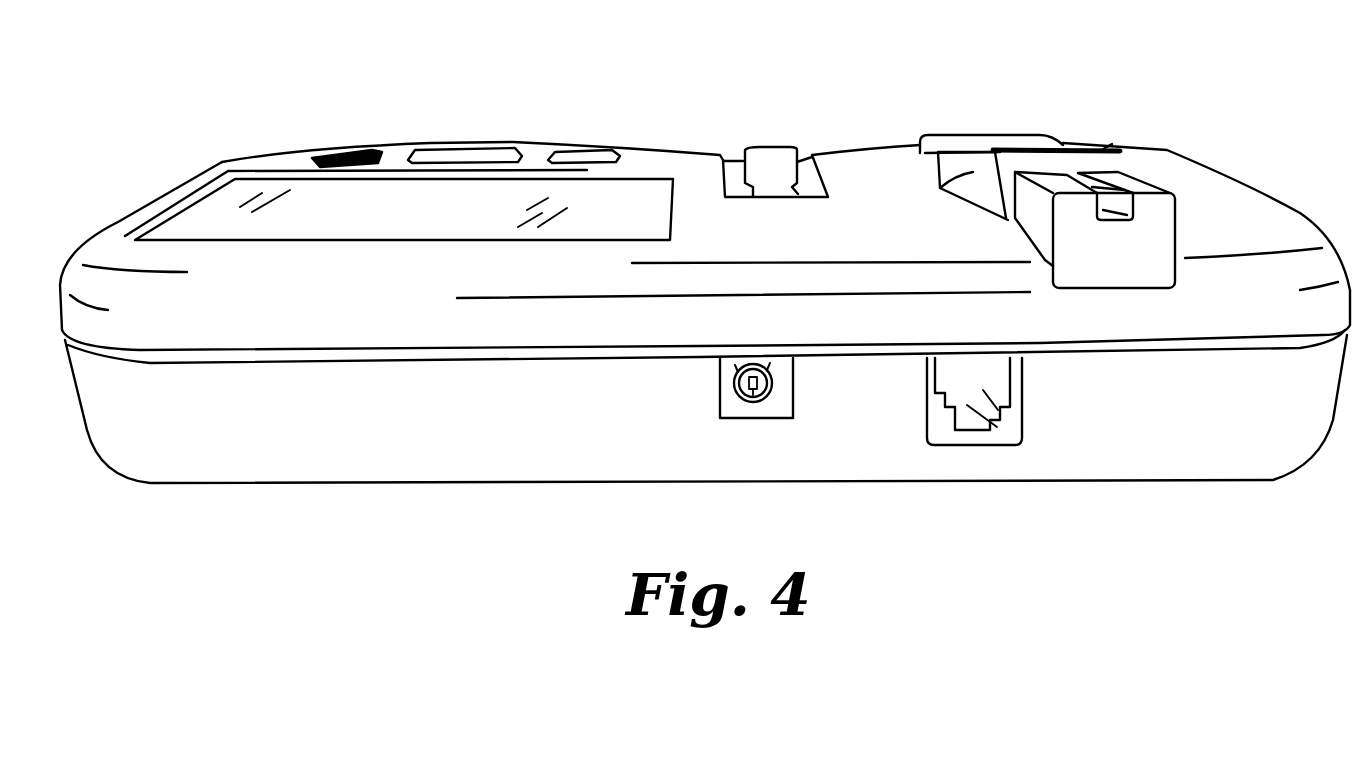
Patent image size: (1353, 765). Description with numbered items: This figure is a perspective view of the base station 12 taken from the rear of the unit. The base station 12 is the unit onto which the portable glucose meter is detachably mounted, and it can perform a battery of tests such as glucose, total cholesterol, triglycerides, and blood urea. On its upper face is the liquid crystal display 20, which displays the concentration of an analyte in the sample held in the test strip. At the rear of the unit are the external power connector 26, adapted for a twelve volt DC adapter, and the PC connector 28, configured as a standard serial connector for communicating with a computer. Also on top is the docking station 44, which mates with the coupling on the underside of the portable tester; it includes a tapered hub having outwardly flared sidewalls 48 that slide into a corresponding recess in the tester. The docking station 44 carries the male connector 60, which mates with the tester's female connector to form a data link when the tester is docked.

The base station 12 is at (663, 112).
The liquid crystal display 20 is at (362, 205).
The external power connector 26 is at (753, 400).
The PC connector 28 is at (987, 427).
The docking station 44 is at (1205, 234).
The outwardly flared sidewalls 48 is at (940, 188).
The male connector 60 is at (1027, 150).